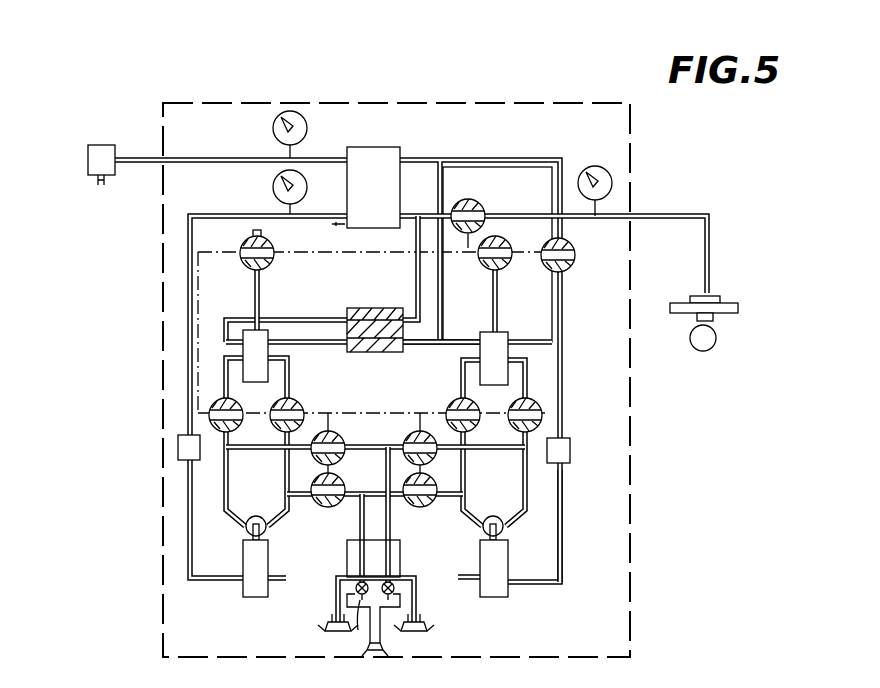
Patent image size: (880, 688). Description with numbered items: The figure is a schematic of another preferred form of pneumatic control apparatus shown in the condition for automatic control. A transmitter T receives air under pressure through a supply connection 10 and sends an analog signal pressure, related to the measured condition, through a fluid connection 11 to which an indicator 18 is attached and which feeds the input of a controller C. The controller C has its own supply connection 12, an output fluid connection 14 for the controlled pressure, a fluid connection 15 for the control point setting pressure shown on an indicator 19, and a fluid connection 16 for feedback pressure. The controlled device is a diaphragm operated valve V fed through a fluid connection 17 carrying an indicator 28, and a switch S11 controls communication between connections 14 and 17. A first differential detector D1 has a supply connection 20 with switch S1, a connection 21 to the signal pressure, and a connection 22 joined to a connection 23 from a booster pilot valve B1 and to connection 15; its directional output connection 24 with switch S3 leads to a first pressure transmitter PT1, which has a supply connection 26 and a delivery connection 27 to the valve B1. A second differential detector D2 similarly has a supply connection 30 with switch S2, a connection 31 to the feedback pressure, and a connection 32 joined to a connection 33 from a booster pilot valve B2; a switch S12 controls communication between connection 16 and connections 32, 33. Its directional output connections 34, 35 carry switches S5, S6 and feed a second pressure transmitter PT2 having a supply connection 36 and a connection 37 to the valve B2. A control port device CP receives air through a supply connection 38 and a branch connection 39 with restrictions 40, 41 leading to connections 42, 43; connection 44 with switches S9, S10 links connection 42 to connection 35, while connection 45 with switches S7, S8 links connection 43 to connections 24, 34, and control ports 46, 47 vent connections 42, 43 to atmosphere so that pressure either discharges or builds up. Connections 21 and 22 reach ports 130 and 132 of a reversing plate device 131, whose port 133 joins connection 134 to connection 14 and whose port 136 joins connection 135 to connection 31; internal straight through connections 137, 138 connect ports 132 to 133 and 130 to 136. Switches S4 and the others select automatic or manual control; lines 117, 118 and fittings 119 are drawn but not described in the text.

The supply connection 10 is at (97, 181).
The transmitter T is at (100, 144).
The fluid connection 11 is at (325, 158).
The supply connection 12 is at (334, 224).
The fluid connection 14 is at (410, 226).
The fluid connection 15 is at (315, 214).
The fluid connection 16 is at (426, 158).
The fluid connection 17 is at (665, 217).
The indicator 18 is at (273, 126).
The indicator 19 is at (273, 187).
The fluid connection 20 is at (252, 234).
The fluid connection 21 is at (295, 344).
The fluid connection 22 is at (200, 314).
The fluid connection 23 is at (188, 400).
The directional output connection 24 is at (224, 366).
The pressure fluid supply connection 26 is at (258, 597).
The fluid delivery connection 27 is at (188, 500).
The indicator 28 is at (598, 167).
The fluid connection 30 is at (503, 240).
The fluid connection 31 is at (465, 344).
The fluid connection 32 is at (535, 340).
The fluid connection 33 is at (563, 388).
The directional output connection 34 is at (530, 380).
The directional output connection 35 is at (461, 385).
The pressure fluid supply connection 36 is at (462, 580).
The fluid connection 37 is at (563, 492).
The pressure fluid supply connection 38 is at (383, 648).
The branch fluid connection 39 is at (365, 642).
The restriction 40 is at (356, 588).
The restriction 41 is at (394, 589).
The fluid connection 42 is at (352, 548).
The fluid connection 43 is at (391, 528).
The fluid connection 44 is at (383, 470).
The fluid connection 45 is at (356, 452).
The control port 46 is at (322, 632).
The control port 47 is at (430, 632).
The line 117 is at (228, 522).
The line 118 is at (284, 520).
The fitting 119 is at (256, 515).
The port 130 is at (358, 353).
The reversing plate device 131 is at (378, 353).
The port 132 is at (345, 314).
The port 133 is at (400, 310).
The fluid connection 134 is at (419, 214).
The fluid connection 135 is at (430, 340).
The port 136 is at (398, 353).
The straight through connection 137 is at (385, 322).
The straight through connection 138 is at (340, 324).
The controller C is at (382, 148).
The diaphragm operated valve V is at (704, 323).
The control port device CP is at (401, 556).
The first differential detector D1 is at (255, 356).
The second differential detector D2 is at (494, 358).
The first pressure transmitter PT1 is at (269, 560).
The second pressure transmitter PT2 is at (512, 562).
The booster pilot valve B1 is at (177, 448).
The booster pilot valve B2 is at (571, 447).
The switch S1 is at (246, 260).
The switch S2 is at (512, 253).
The switch S3 is at (237, 426).
The switch S4 is at (277, 403).
The switch S5 is at (540, 411).
The switch S6 is at (450, 409).
The switch S7 is at (342, 442).
The switch S8 is at (408, 443).
The switch S9 is at (333, 506).
The switch S10 is at (422, 507).
The switch S11 is at (472, 204).
The switch S12 is at (575, 259).